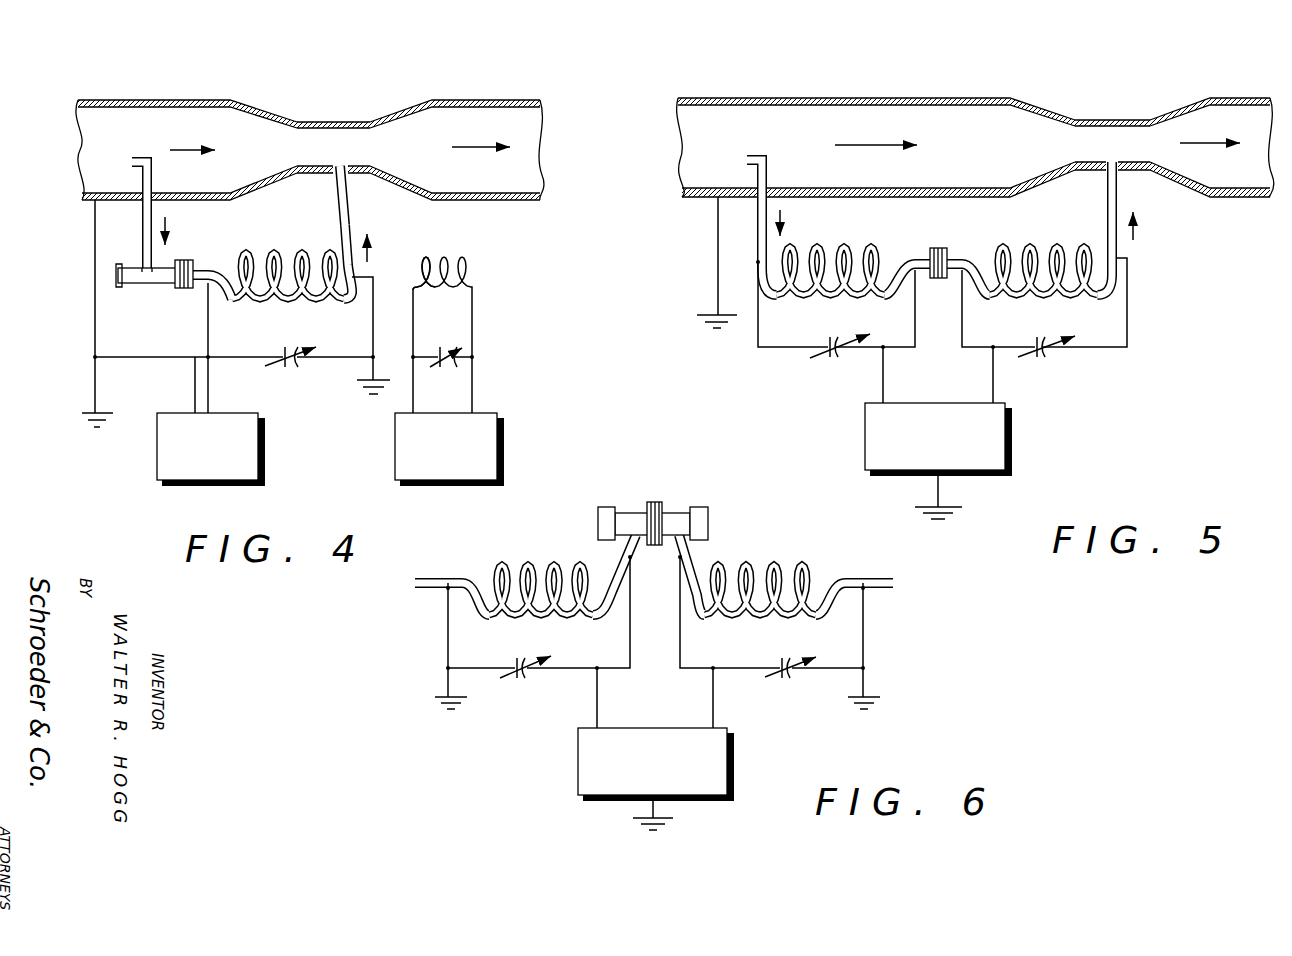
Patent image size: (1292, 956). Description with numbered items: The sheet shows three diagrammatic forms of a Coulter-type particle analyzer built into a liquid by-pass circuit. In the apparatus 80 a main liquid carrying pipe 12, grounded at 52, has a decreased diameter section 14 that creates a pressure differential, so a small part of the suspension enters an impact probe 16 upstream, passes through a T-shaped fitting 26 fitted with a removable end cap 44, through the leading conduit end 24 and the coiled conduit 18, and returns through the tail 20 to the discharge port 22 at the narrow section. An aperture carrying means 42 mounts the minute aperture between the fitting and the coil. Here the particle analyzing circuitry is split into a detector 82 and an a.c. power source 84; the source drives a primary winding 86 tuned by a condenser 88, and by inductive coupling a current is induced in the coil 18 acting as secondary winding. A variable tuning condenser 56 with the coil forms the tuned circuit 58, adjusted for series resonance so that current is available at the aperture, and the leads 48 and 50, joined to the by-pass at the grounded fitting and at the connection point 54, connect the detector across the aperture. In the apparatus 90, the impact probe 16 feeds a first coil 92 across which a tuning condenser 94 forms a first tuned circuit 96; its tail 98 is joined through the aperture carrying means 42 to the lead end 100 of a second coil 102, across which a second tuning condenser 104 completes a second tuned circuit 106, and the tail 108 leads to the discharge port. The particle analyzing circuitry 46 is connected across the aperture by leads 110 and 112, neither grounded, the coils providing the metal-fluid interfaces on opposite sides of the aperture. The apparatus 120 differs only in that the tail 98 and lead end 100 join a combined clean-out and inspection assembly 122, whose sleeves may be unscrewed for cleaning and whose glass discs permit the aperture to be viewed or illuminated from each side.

In FIG. 4, the main liquid carrying pipe 12 is at (167, 100).
In FIG. 5, the main liquid carrying pipe 12 is at (867, 98).
In FIG. 4, the decreased diameter section 14 is at (348, 150).
In FIG. 5, the decreased diameter section 14 is at (1113, 119).
In FIG. 4, the impact probe 16 is at (133, 160).
In FIG. 5, the impact probe 16 is at (747, 156).
In FIG. 4, the coiled conduit 18 is at (312, 253).
In FIG. 4, the tail 20 is at (353, 227).
In FIG. 4, the discharge port 22 is at (334, 168).
In FIG. 5, the discharge port 22 is at (1110, 173).
In FIG. 4, the leading conduit end 24 is at (215, 269).
In FIG. 4, the T-shaped fitting 26 is at (157, 282).
In FIG. 4, the aperture carrying means 42 is at (182, 298).
In FIG. 5, the aperture carrying means 42 is at (937, 288).
In FIG. 6, the aperture carrying means 42 is at (655, 497).
In FIG. 4, the removable end cap 44 is at (120, 276).
In FIG. 5, the particle analyzing circuitry 46 is at (1013, 442).
In FIG. 4, the lead 48 is at (167, 360).
In FIG. 4, the lead 50 is at (210, 382).
In FIG. 4, the ground connection 52 is at (92, 202).
In FIG. 4, the connection point 54 is at (213, 287).
In FIG. 4, the variable tuning condenser 56 is at (290, 374).
In FIG. 4, the parallel resonant circuit 58 is at (333, 323).
In FIG. 4, the apparatus 80 is at (402, 239).
In FIG. 4, the detector 82 is at (265, 448).
In FIG. 4, the a.c. power source 84 is at (500, 438).
In FIG. 4, the primary winding 86 is at (473, 273).
In FIG. 4, the condenser 88 is at (457, 345).
In FIG. 5, the apparatus 90 is at (1092, 411).
In FIG. 5, the first coil 92 is at (845, 247).
In FIG. 6, the first coil 92 is at (528, 565).
In FIG. 5, the tuning condenser 94 is at (838, 357).
In FIG. 5, the first tuned circuit 96 is at (802, 314).
In FIG. 6, the first tuned circuit 96 is at (522, 633).
In FIG. 5, the tail 98 is at (917, 257).
In FIG. 6, the tail 98 is at (617, 558).
In FIG. 5, the lead end 100 is at (955, 260).
In FIG. 6, the lead end 100 is at (693, 568).
In FIG. 5, the second coil 102 is at (1027, 250).
In FIG. 6, the second coil 102 is at (805, 570).
In FIG. 5, the second tuning condenser 104 is at (1040, 357).
In FIG. 5, the second tuned circuit 106 is at (1058, 310).
In FIG. 6, the second tuned circuit 106 is at (810, 632).
In FIG. 5, the tail 108 is at (1123, 193).
In FIG. 6, the tail 108 is at (880, 578).
In FIG. 5, the lead 110 is at (883, 380).
In FIG. 5, the lead 112 is at (993, 387).
In FIG. 6, the apparatus 120 is at (772, 726).
In FIG. 6, the combined clean-out and inspection assembly 122 is at (730, 523).